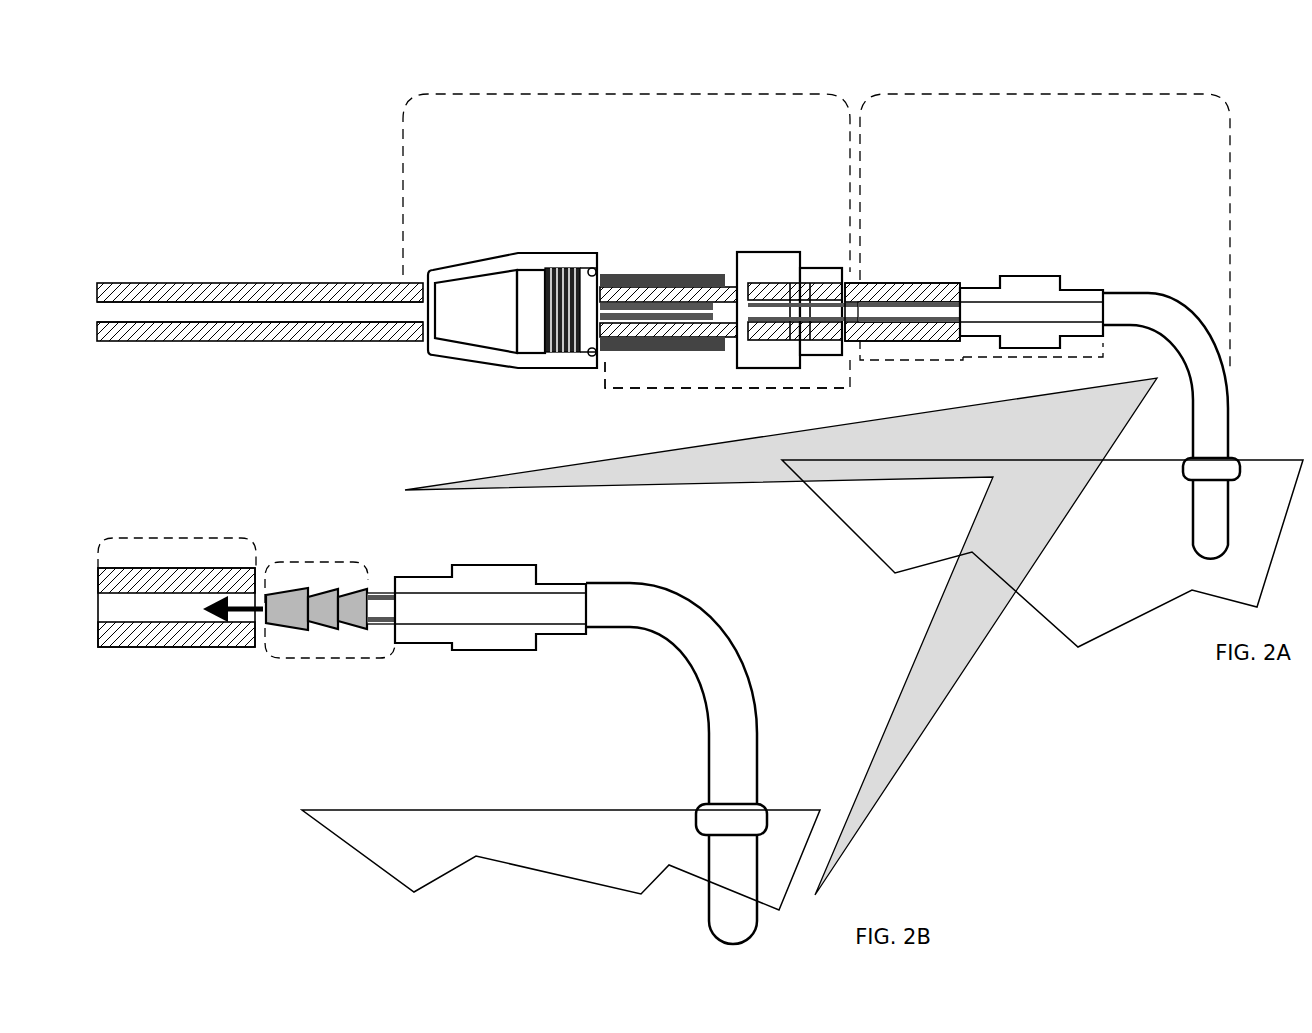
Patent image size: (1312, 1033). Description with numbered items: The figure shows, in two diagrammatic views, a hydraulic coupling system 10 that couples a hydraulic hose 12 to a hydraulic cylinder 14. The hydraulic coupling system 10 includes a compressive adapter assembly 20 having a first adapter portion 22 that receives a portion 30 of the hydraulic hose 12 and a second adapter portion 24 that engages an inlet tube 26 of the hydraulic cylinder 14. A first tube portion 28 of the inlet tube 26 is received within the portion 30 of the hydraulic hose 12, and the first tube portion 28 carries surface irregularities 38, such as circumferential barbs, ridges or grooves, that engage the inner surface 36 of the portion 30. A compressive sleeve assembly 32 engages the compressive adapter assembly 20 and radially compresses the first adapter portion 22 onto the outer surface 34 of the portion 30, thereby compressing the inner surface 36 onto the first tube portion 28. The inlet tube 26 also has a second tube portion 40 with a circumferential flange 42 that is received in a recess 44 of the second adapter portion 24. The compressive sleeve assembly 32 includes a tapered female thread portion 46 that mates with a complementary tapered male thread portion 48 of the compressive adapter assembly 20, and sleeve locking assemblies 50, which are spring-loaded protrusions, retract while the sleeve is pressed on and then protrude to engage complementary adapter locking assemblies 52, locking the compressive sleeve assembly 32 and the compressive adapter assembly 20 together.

In FIG. 2A, the hydraulic coupling system 10 is at (642, 94).
In FIG. 2A, the hydraulic hose 12 is at (262, 283).
In FIG. 2B, the hydraulic cylinder 14 is at (561, 860).
In FIG. 2A, the hydraulic cylinder 14 is at (1042, 553).
In FIG. 2A, the compressive adapter assembly 20 is at (605, 395).
In FIG. 2A, the first adapter portion 22 is at (647, 268).
In FIG. 2A, the second adapter portion 24 is at (817, 266).
In FIG. 2B, the inlet tube 26 is at (691, 644).
In FIG. 2A, the inlet tube 26 is at (1059, 94).
In FIG. 2B, the first tube portion 28 is at (395, 658).
In FIG. 2A, the first tube portion 28 is at (902, 318).
In FIG. 2B, the portion 30 is at (256, 538).
In FIG. 2A, the portion 30 is at (858, 372).
In FIG. 2A, the compressive sleeve assembly 32 is at (483, 248).
In FIG. 2B, the outer surface 34 is at (190, 575).
In FIG. 2A, the outer surface 34 is at (882, 300).
In FIG. 2B, the inner surface 36 is at (190, 575).
In FIG. 2A, the inner surface 36 is at (882, 300).
In FIG. 2B, the surface irregularities 38 is at (305, 562).
In FIG. 2A, the second tube portion 40 is at (1023, 357).
In FIG. 2A, the circumferential flange 42 is at (1045, 276).
In FIG. 2A, the recess 44 is at (787, 268).
In FIG. 2A, the tapered female thread portion 46 is at (563, 270).
In FIG. 2A, the tapered male thread portion 48 is at (687, 268).
In FIG. 2A, the sleeve locking assemblies 50 is at (592, 268).
In FIG. 2A, the adapter locking assemblies 52 is at (733, 268).